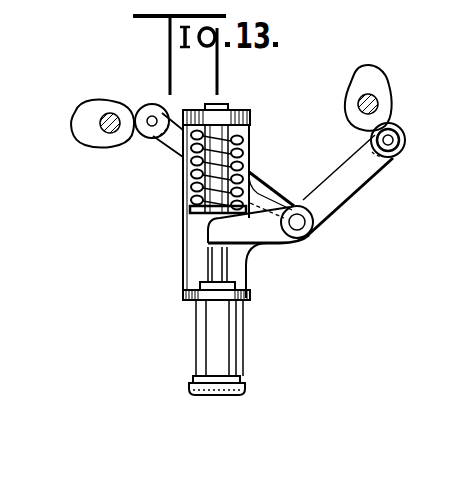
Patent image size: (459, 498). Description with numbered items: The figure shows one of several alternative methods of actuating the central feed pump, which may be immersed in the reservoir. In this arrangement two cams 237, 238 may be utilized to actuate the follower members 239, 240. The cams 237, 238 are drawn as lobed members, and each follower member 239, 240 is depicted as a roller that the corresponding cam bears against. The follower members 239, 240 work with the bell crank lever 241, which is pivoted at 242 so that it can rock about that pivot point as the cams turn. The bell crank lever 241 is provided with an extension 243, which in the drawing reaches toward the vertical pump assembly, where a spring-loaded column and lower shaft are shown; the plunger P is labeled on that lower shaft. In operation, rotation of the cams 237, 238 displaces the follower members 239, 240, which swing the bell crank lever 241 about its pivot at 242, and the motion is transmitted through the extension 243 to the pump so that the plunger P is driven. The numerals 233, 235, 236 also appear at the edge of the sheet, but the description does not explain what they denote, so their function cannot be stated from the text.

The support frame 233 is at (444, 172).
The connecting member 235 is at (447, 282).
The connecting member 236 is at (446, 302).
The cam 237 is at (377, 73).
The cam 238 is at (78, 132).
The follower member 239 is at (406, 131).
The follower member 240 is at (141, 139).
The bell crank lever 241 is at (346, 183).
The pivot 242 is at (303, 228).
The extension 243 is at (256, 244).
The plunger P is at (210, 335).